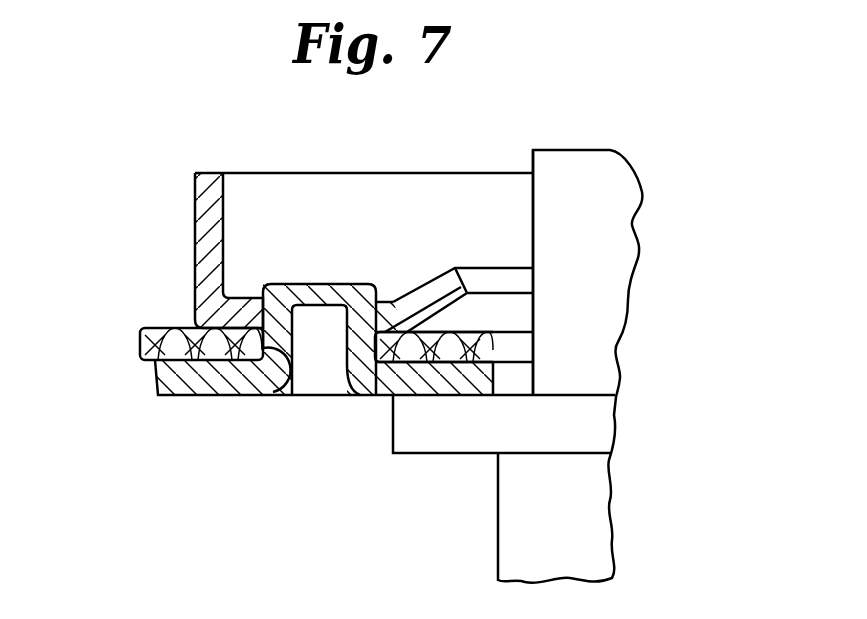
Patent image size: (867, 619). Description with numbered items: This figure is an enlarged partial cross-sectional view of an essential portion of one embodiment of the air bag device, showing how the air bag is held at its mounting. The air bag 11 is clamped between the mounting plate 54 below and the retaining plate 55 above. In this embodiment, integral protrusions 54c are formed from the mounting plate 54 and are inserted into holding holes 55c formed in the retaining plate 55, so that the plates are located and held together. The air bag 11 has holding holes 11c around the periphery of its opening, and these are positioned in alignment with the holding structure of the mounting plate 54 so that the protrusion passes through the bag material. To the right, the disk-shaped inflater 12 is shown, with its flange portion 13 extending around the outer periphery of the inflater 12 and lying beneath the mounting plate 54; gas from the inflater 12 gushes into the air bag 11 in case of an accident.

The air bag 11 is at (140, 347).
The holding hole 11c is at (290, 350).
The inflater 12 is at (607, 288).
The flange portion 13 is at (598, 418).
The mounting plate 54 is at (160, 383).
The integral protrusion 54c is at (323, 292).
The retaining plate 55 is at (205, 240).
The holding hole 55c is at (280, 300).